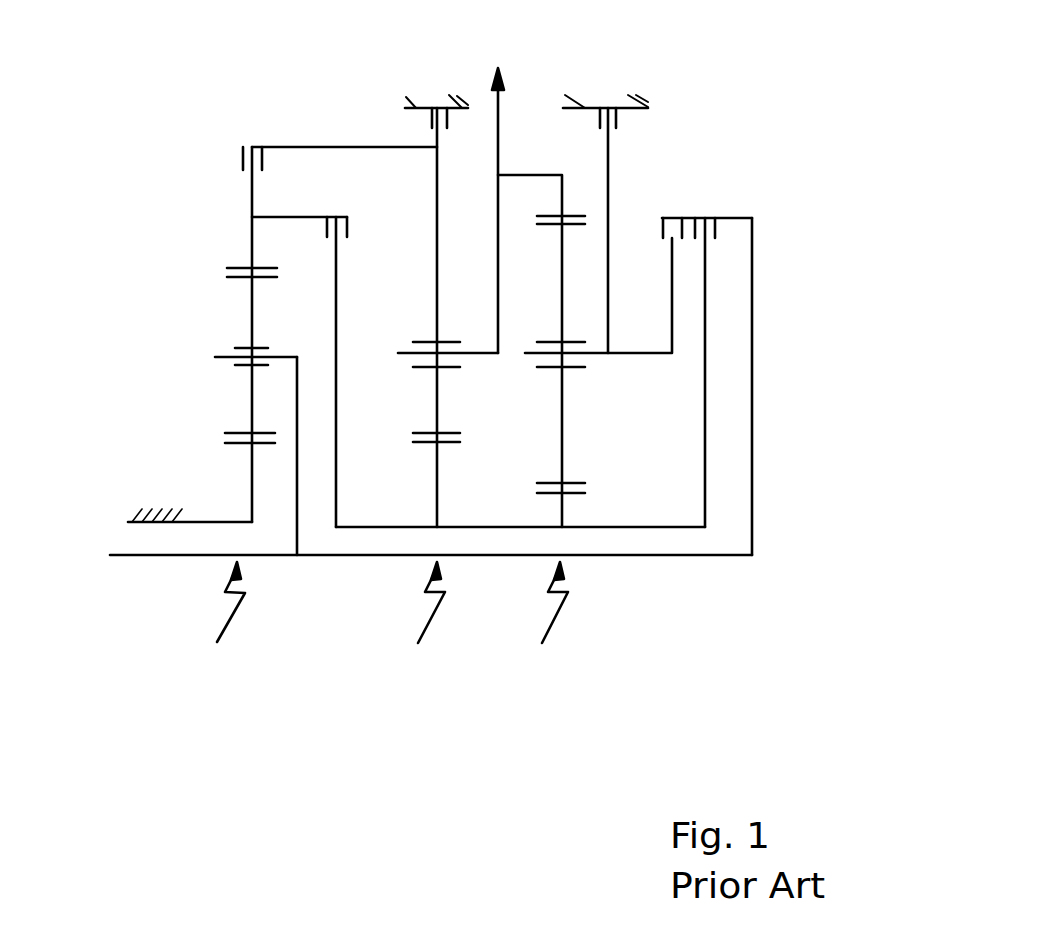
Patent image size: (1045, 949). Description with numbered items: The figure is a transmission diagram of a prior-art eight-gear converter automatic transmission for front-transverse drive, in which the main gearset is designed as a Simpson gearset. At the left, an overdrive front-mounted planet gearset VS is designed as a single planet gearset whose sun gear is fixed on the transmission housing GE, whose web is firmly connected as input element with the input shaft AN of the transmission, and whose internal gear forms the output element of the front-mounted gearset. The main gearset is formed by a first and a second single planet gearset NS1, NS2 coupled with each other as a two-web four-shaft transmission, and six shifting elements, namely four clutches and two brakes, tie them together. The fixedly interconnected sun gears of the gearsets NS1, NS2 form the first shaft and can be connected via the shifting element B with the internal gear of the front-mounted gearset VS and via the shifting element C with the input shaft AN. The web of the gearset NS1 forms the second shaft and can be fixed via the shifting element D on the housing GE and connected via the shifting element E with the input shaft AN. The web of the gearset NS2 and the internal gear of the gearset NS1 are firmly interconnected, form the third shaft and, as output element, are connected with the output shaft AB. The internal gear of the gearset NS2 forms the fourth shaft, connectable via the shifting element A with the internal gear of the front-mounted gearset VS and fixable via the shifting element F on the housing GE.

The input shaft AN is at (173, 558).
The output shaft AB is at (500, 138).
The transmission housing GE is at (163, 520).
The front-mounted planet gearset VS is at (218, 624).
The second single planet gearset NS2 is at (430, 624).
The first single planet gearset NS1 is at (549, 624).
The shifting element A is at (250, 134).
The shifting element B is at (332, 352).
The shifting element C is at (723, 364).
The shifting element D is at (605, 204).
The shifting element E is at (701, 206).
The shifting element F is at (436, 91).